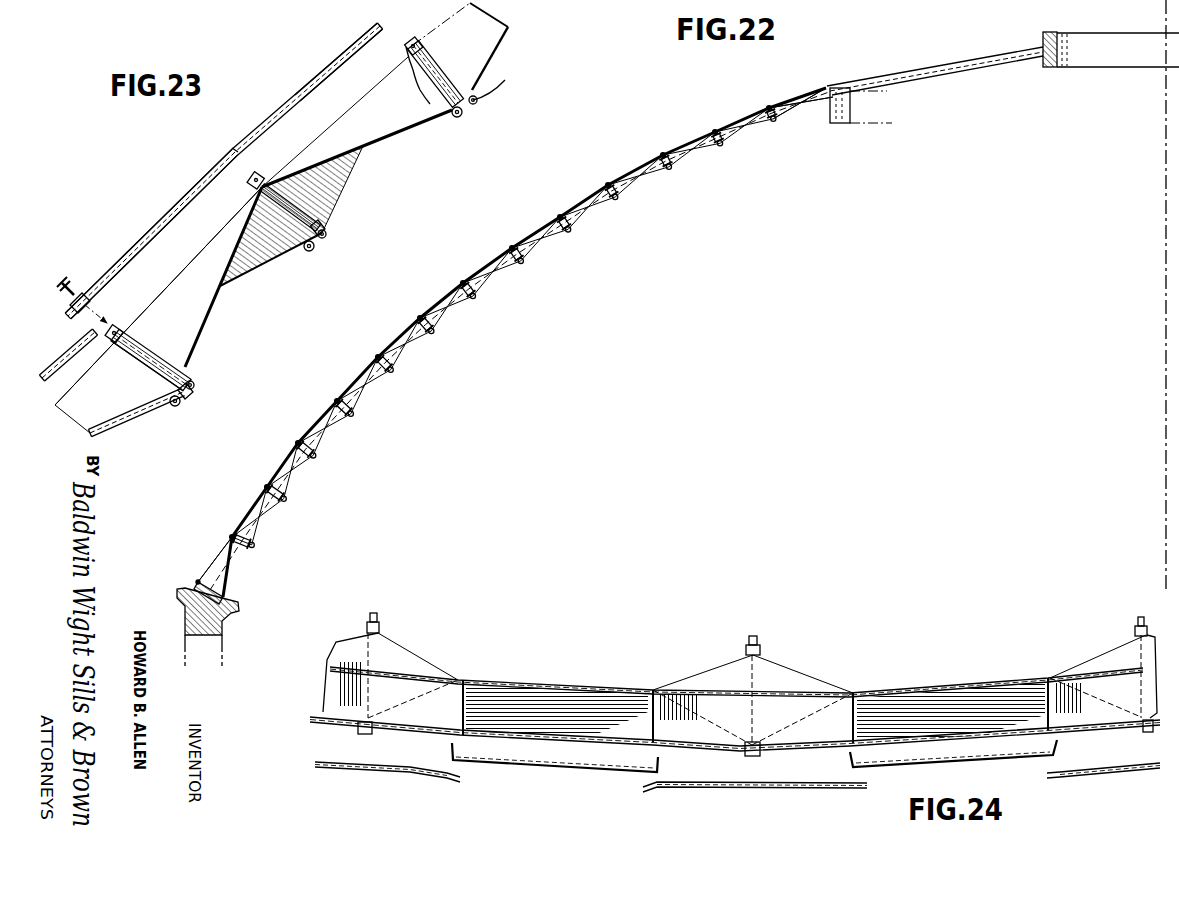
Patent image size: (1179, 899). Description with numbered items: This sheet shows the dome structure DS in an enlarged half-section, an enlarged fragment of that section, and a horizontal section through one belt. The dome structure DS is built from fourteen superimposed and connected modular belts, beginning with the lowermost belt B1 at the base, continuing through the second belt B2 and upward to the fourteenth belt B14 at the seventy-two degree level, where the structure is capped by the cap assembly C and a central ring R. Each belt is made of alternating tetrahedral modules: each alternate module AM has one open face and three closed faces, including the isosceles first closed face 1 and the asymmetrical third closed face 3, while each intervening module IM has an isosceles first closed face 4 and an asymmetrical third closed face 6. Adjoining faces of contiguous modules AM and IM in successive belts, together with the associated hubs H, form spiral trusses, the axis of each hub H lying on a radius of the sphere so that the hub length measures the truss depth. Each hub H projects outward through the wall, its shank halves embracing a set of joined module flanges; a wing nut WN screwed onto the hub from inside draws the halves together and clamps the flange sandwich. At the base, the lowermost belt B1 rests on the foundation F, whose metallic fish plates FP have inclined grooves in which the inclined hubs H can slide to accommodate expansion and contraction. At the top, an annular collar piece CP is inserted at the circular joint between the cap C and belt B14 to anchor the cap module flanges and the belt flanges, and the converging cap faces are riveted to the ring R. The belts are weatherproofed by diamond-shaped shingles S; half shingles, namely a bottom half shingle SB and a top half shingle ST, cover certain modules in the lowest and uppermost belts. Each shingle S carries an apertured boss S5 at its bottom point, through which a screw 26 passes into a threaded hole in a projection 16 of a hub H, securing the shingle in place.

In FIG. 22, the dome structure DS is at (588, 190).
In FIG. 22, the first closed face 1 is at (282, 506).
In FIG. 23, the first closed face 1 is at (388, 138).
In FIG. 24, the first closed face 1 is at (602, 688).
In FIG. 22, the hub H is at (282, 478).
In FIG. 23, the hub H is at (449, 64).
In FIG. 22, the first closed face 4 is at (303, 492).
In FIG. 23, the first closed face 4 is at (209, 313).
In FIG. 24, the first closed face 4 is at (414, 670).
In FIG. 22, the second modular belt B2 is at (252, 503).
In FIG. 22, the lowermost belt B1 is at (211, 565).
In FIG. 22, the fourteenth belt B14 is at (801, 96).
In FIG. 22, the intervening module IM is at (243, 552).
In FIG. 23, the intervening module IM is at (204, 338).
In FIG. 22, the alternate module AM is at (218, 553).
In FIG. 23, the alternate module AM is at (268, 265).
In FIG. 22, the fish plate FP is at (227, 599).
In FIG. 22, the foundation F is at (184, 612).
In FIG. 22, the annular collar piece CP is at (843, 122).
In FIG. 22, the cap assembly C is at (928, 56).
In FIG. 22, the central ring R is at (1043, 38).
In FIG. 23, the shingle S is at (271, 113).
In FIG. 24, the shingle S is at (405, 776).
In FIG. 23, the top half shingle ST is at (348, 52).
In FIG. 23, the bottom half shingle SB is at (172, 212).
In FIG. 23, the third closed face 3 is at (356, 113).
In FIG. 23, the third closed face 6 is at (201, 253).
In FIG. 23, the projection 16 is at (414, 44).
In FIG. 24, the projection 16 is at (358, 736).
In FIG. 23, the wing nut WN is at (480, 51).
In FIG. 24, the wing nut WN is at (379, 619).
In FIG. 23, the apertured boss S5 is at (86, 294).
In FIG. 23, the screw 26 is at (65, 283).